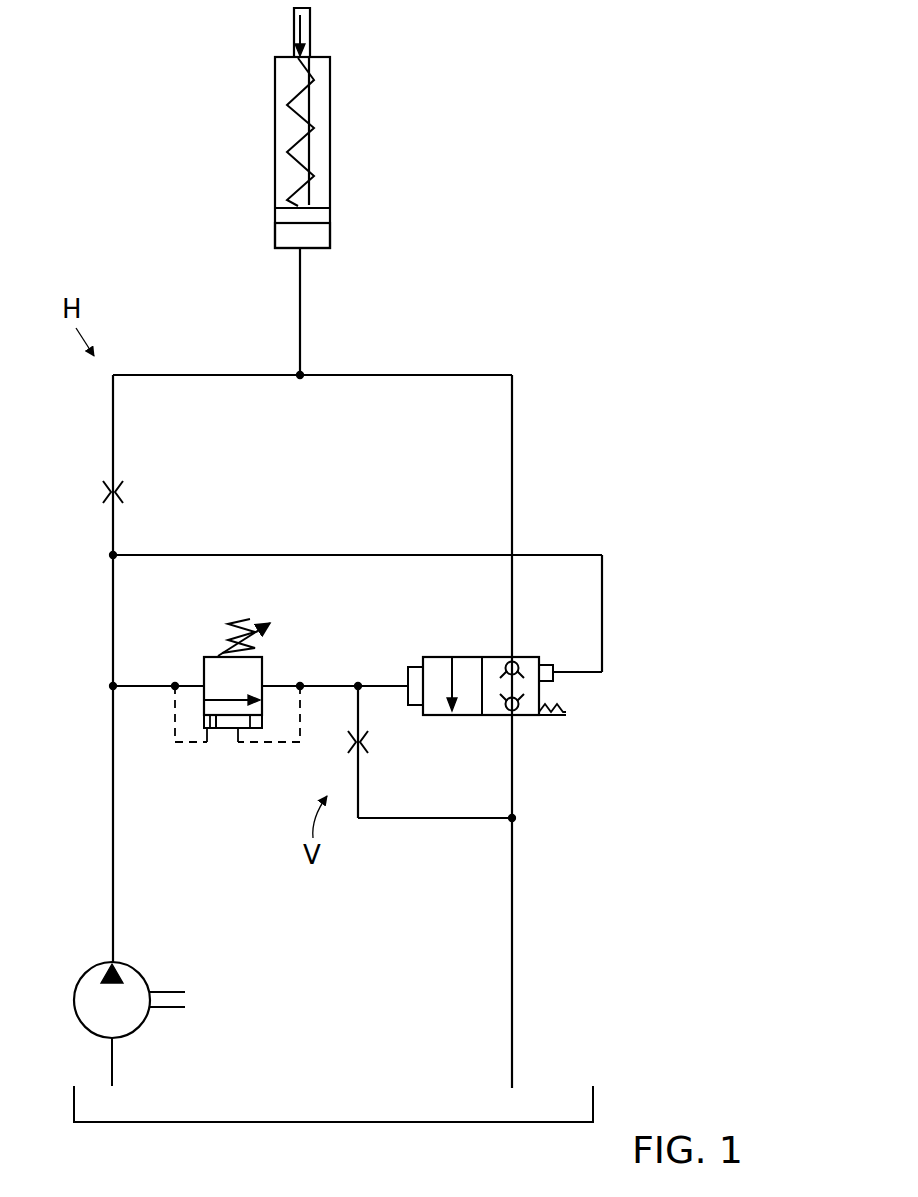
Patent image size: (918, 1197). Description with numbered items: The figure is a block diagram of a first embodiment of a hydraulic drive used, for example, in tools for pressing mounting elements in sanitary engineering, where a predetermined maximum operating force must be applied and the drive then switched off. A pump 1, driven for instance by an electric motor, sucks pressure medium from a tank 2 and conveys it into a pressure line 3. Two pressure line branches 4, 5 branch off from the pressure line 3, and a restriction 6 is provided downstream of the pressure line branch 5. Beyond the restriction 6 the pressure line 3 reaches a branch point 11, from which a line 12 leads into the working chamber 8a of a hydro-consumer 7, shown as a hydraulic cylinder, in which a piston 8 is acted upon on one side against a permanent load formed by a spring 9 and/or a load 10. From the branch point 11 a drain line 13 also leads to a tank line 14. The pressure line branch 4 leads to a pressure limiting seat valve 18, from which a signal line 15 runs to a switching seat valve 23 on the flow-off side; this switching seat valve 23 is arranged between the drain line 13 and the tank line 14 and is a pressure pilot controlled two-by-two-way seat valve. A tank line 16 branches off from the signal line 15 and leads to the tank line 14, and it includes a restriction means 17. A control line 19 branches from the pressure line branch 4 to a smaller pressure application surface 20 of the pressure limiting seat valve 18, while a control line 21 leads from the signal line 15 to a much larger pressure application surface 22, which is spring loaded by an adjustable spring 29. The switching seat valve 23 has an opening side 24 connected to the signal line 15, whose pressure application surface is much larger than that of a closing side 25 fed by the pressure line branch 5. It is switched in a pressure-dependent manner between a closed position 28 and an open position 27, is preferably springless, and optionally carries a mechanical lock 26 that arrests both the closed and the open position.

The pump 1 is at (74, 990).
The tank 2 is at (248, 1122).
The pressure line 3 is at (113, 632).
The pressure line branch 4 is at (150, 690).
The pressure line branch 5 is at (168, 555).
The restriction 6 is at (100, 492).
The hydro-consumer 7 is at (330, 166).
The piston 8 is at (320, 215).
The working chamber 8a is at (320, 238).
The spring 9 is at (277, 165).
The load 10 is at (310, 26).
The branch point 11 is at (300, 380).
The line 12 is at (300, 308).
The drain line 13 is at (512, 430).
The tank line 14 is at (512, 862).
The signal line 15 is at (318, 686).
The tank line 16 is at (420, 820).
The restriction means 17 is at (370, 742).
The pressure limiting seat valve 18 is at (205, 650).
The control line 19 is at (180, 744).
The smaller pressure application surface 20 is at (212, 730).
The control line 21 is at (286, 744).
The larger pressure application surface 22 is at (251, 730).
The switching seat valve 23 is at (476, 638).
The opening side 24 is at (412, 666).
The closing side 25 is at (550, 663).
The mechanical lock 26 is at (560, 722).
The open position 27 is at (466, 716).
The closed position 28 is at (528, 657).
The adjustable spring 29 is at (242, 622).